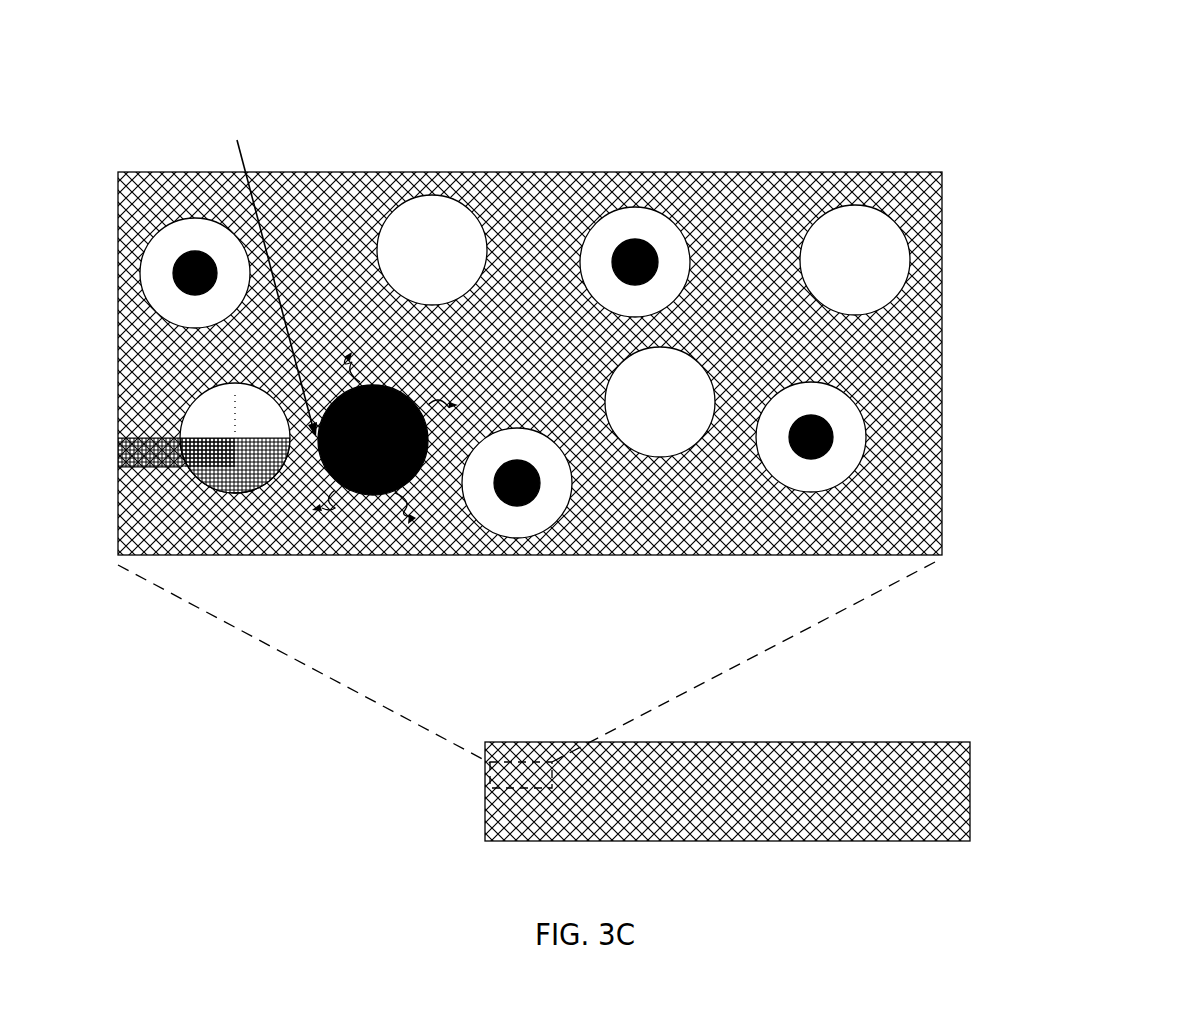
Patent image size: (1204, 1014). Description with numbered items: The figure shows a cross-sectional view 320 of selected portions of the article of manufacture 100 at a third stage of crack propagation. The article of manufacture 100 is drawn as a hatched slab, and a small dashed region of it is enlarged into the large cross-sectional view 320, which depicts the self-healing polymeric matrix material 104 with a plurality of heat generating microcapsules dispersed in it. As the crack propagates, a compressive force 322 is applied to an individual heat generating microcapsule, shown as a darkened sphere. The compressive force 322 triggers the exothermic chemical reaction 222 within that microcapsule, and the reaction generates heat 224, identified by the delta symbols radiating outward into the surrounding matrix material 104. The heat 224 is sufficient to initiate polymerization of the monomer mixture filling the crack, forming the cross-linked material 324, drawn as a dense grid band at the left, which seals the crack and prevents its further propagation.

The cross-sectional view 320 is at (1082, 62).
The self-healing polymeric matrix material 104 is at (922, 539).
The compressive force 322 is at (250, 262).
The cross-linked material 324 is at (132, 472).
The heat 224 is at (280, 454).
The exothermic chemical reaction 222 is at (347, 457).
The article of manufacture 100 is at (857, 710).